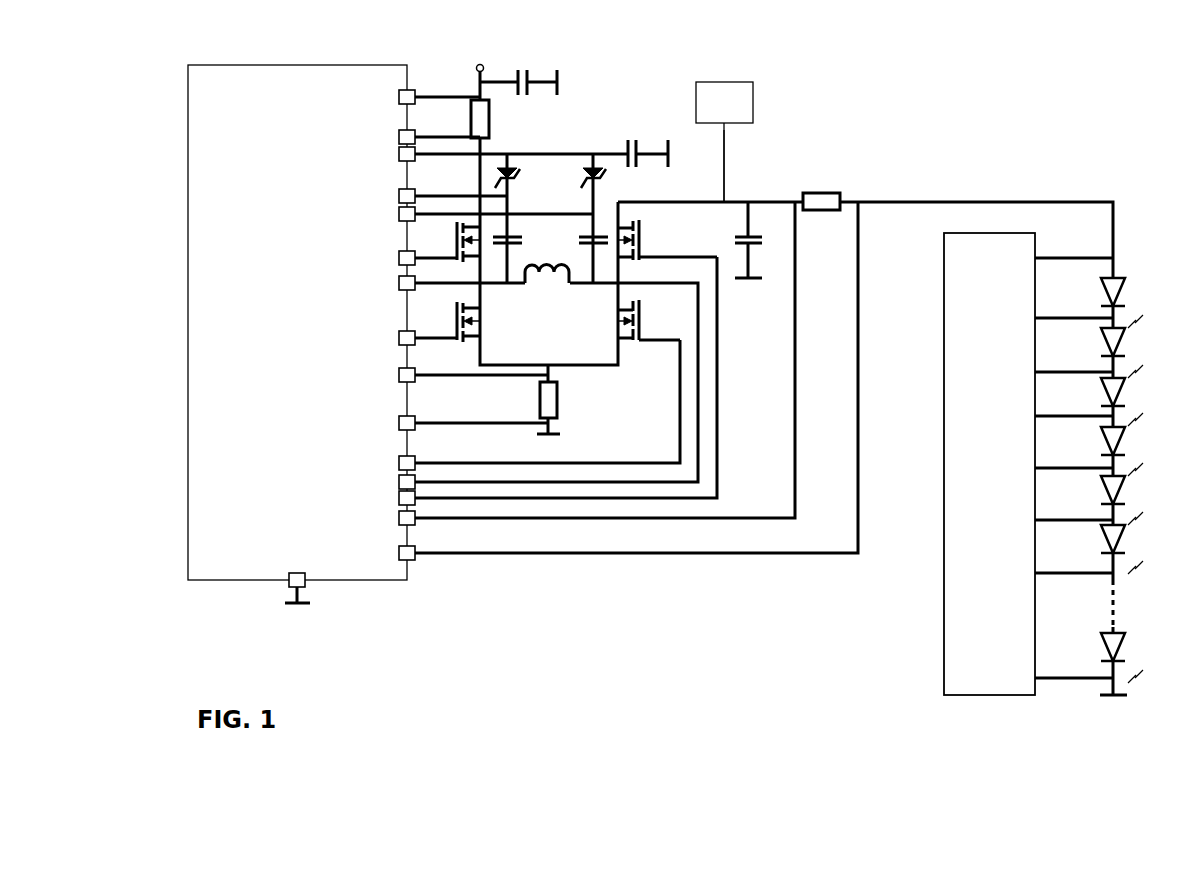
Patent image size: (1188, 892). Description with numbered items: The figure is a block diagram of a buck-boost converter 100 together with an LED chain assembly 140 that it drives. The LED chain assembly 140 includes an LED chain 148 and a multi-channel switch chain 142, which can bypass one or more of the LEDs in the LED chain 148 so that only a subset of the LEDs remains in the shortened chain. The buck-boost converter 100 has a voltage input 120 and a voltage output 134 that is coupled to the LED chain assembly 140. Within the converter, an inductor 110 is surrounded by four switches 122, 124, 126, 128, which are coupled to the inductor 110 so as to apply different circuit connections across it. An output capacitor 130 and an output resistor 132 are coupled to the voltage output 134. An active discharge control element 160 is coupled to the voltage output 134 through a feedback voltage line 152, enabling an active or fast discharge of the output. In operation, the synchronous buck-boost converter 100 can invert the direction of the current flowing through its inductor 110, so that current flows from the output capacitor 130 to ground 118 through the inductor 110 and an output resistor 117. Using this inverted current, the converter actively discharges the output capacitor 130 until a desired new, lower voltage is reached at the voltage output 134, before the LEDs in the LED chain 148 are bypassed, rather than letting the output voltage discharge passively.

The buck-boost converter 100 is at (902, 73).
The inductor 110 is at (548, 262).
The output resistor 117 is at (560, 400).
The ground 118 is at (562, 434).
The voltage input 120 is at (476, 68).
The switch 122 is at (455, 236).
The switch 124 is at (455, 320).
The switch 126 is at (641, 238).
The switch 128 is at (642, 321).
The output capacitor 130 is at (752, 236).
The output resistor 132 is at (823, 195).
The voltage output 134 is at (889, 202).
The LED chain assembly 140 is at (1023, 91).
The multi-channel switch chain 142 is at (942, 313).
The LED chain 148 is at (1125, 272).
The feedback voltage line 152 is at (726, 157).
The active discharge control element 160 is at (724, 142).